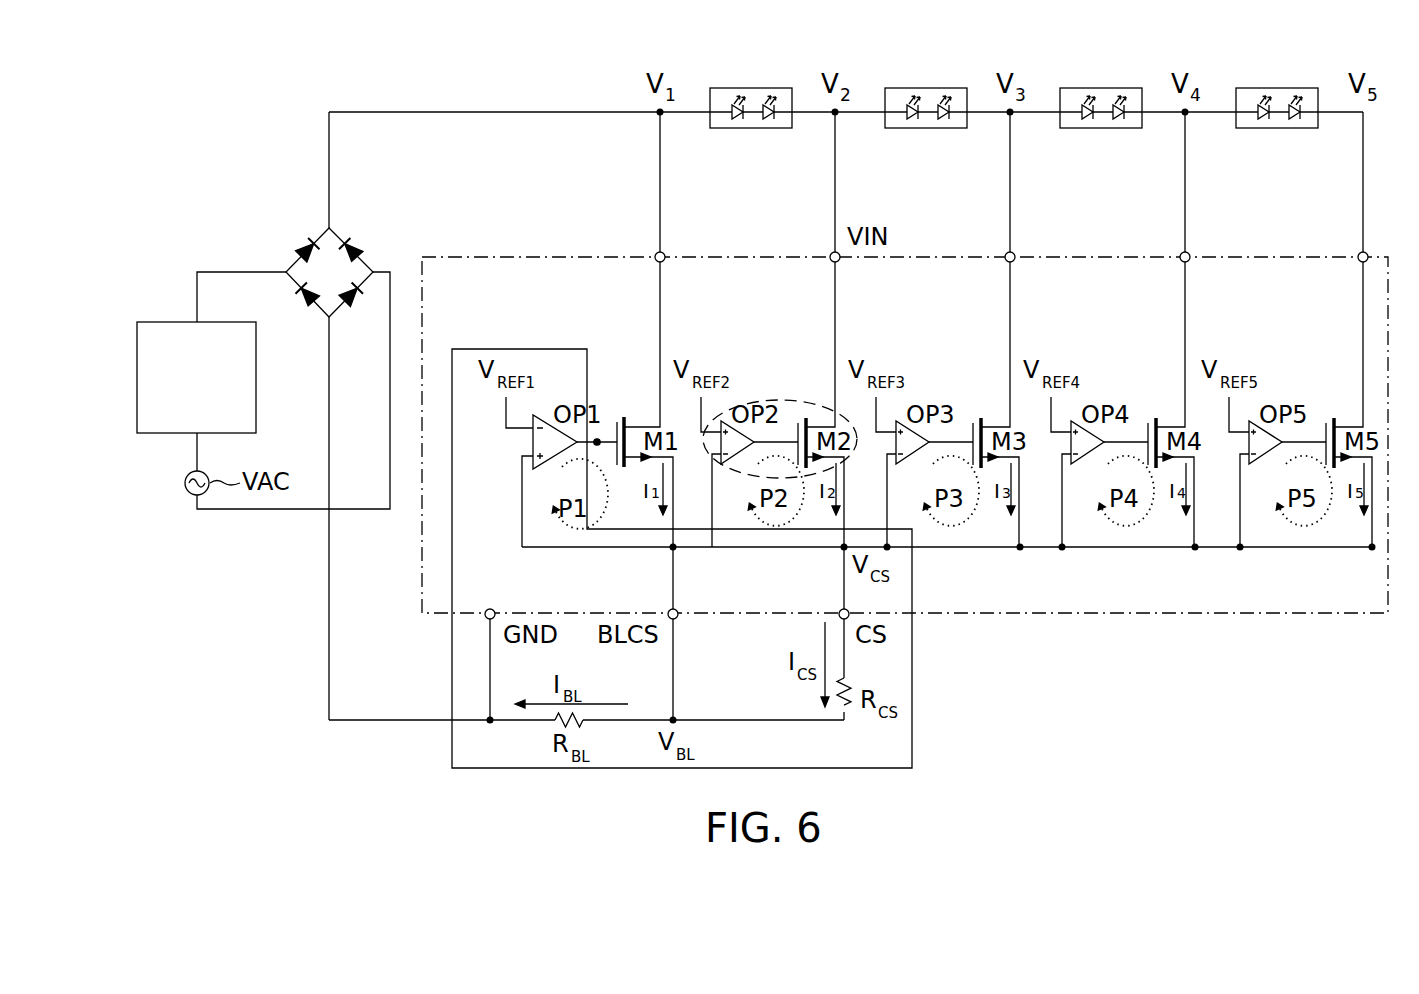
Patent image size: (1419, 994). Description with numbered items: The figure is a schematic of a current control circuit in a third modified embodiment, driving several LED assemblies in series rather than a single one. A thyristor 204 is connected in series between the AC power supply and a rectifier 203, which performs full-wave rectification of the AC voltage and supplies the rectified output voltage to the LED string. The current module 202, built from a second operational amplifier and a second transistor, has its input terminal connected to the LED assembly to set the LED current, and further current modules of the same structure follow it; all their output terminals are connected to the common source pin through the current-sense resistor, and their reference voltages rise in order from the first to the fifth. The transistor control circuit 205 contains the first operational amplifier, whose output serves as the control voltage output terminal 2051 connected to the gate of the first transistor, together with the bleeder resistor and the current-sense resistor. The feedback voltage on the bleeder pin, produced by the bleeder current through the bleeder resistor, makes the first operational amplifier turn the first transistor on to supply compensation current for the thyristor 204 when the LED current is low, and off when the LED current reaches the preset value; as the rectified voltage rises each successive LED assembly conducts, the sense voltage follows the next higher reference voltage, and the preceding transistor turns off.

The current module 202 is at (758, 401).
The rectifier 203 is at (366, 227).
The thyristor 204 is at (196, 377).
The transistor control circuit 205 is at (518, 349).
The control voltage output terminal 2051 is at (598, 440).